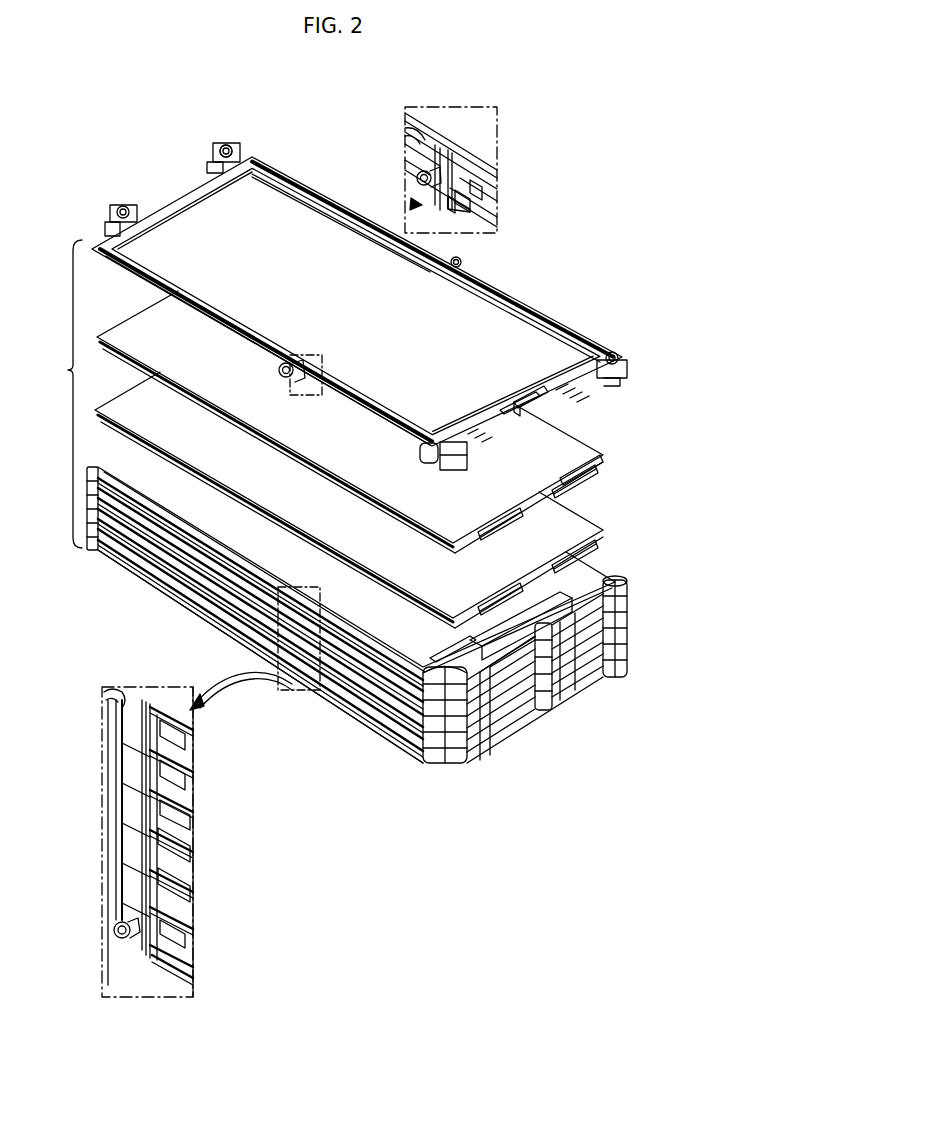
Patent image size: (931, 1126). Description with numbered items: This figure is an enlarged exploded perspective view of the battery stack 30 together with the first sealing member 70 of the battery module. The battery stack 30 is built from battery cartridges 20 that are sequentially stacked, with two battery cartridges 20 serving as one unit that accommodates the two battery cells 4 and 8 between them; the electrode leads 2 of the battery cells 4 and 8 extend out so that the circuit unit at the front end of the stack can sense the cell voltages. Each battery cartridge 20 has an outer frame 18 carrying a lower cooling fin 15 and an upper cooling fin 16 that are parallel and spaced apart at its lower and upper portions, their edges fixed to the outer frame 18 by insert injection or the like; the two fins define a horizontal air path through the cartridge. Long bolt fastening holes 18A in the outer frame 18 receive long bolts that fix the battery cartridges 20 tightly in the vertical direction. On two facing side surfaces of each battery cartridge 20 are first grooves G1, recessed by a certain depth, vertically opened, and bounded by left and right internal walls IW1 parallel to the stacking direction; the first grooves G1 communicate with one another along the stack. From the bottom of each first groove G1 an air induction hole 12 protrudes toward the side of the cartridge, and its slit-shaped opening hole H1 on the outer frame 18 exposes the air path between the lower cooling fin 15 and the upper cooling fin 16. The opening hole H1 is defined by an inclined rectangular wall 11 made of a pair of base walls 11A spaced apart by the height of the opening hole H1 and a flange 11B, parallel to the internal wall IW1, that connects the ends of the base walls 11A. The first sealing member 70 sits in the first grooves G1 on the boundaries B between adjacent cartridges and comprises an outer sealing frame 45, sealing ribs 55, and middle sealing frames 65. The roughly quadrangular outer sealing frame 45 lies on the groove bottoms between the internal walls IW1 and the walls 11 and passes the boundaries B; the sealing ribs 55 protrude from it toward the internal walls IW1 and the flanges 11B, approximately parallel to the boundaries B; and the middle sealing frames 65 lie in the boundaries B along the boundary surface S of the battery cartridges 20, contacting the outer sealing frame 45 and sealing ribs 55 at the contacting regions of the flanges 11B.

The electrode leads 2 is at (588, 474).
The battery cell 4 is at (140, 388).
The battery cell 8 is at (148, 308).
The wall 11 is at (548, 215).
The base walls 11A is at (470, 205).
The flange 11B is at (456, 225).
The air induction hole 12 is at (371, 485).
The lower cooling fin 15 is at (322, 218).
The upper cooling fin 16 is at (281, 200).
The outer frame 18 is at (192, 192).
The long bolt fastening holes 18A is at (232, 146).
The battery cartridge 20 is at (272, 160).
The battery stack 30 is at (327, 501).
The outer sealing frame 45 is at (483, 176).
The sealing ribs 55 is at (462, 205).
The middle sealing frames 65 is at (193, 735).
The first sealing member 70 is at (356, 710).
The boundaries B is at (192, 770).
The first groove G1 is at (458, 150).
The opening hole H1 is at (488, 160).
The internal walls IW1 is at (422, 120).
The boundary surface S is at (128, 690).